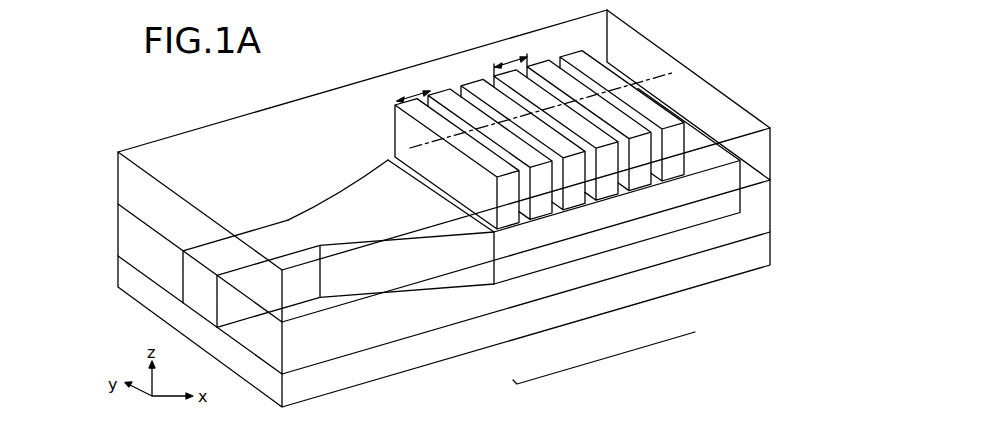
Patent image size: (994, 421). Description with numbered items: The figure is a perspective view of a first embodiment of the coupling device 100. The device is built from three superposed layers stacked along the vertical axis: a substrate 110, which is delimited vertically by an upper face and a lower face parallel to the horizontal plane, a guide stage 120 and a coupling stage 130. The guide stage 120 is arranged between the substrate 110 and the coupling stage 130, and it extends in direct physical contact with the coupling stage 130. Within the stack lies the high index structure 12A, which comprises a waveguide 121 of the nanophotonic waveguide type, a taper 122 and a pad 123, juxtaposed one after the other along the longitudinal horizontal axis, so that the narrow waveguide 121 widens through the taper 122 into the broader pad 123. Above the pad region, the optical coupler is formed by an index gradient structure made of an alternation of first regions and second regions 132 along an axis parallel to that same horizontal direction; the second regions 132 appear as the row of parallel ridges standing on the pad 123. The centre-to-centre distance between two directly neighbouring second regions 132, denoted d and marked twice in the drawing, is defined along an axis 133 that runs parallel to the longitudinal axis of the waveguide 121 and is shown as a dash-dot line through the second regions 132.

The coupling device 100 is at (707, 61).
The substrate 110 is at (118, 277).
The guide stage 120 is at (118, 229).
The coupling stage 130 is at (118, 173).
The waveguide 121 is at (307, 288).
The taper 122 is at (433, 260).
The pad 123 is at (670, 218).
The second regions 132 is at (463, 83).
The axis 133 is at (656, 78).
The high index structure 12A is at (604, 363).